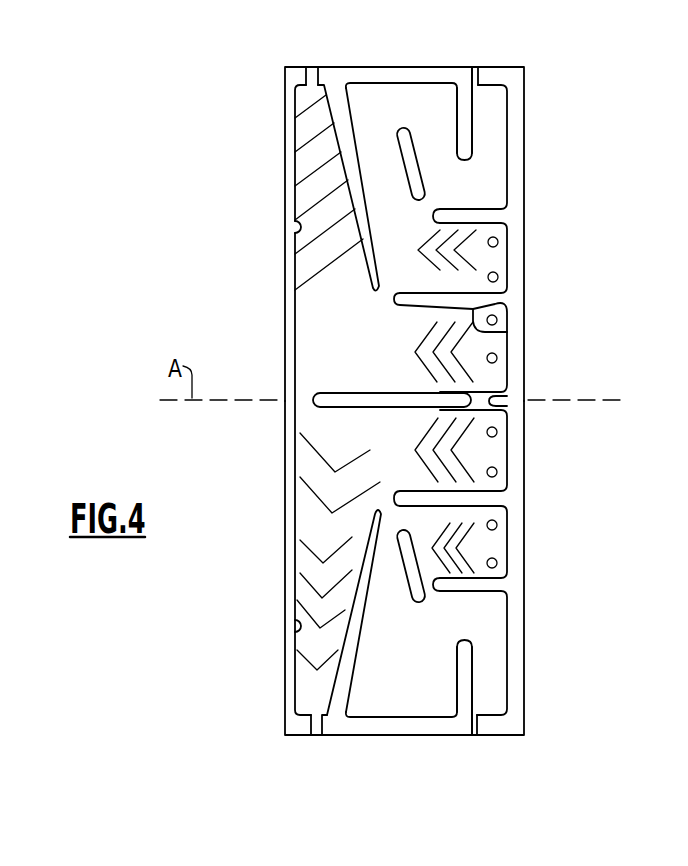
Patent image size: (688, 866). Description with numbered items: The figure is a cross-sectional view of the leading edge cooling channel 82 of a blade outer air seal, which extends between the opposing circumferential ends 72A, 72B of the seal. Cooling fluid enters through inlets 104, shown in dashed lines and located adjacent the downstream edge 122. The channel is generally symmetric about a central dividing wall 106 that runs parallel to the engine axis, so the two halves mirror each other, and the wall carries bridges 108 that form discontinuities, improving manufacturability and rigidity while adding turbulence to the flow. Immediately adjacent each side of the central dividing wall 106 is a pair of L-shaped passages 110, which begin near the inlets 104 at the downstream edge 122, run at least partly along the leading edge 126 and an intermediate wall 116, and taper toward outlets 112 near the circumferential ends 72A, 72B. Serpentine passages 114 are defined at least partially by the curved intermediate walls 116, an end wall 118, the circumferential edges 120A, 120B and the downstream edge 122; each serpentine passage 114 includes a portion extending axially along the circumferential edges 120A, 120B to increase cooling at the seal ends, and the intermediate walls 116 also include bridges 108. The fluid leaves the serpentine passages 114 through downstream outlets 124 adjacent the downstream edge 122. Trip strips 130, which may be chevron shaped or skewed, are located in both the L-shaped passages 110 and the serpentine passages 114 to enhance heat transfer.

The circumferential end 72A is at (458, 735).
The circumferential end 72B is at (390, 67).
The leading edge cooling channel 82 is at (305, 119).
The inlets 104 is at (497, 242).
The central dividing wall 106 is at (351, 400).
The bridges 108 is at (413, 212).
The L-shaped passages 110 is at (304, 282).
The outlets 112 is at (307, 67).
The serpentine passages 114 is at (428, 92).
The intermediate walls 116 is at (350, 178).
The end wall 118 is at (467, 118).
The circumferential edge 120A is at (412, 717).
The circumferential edge 120B is at (366, 83).
The downstream edge 122 is at (507, 148).
The downstream outlets 124 is at (474, 67).
The leading edge 126 is at (294, 226).
The trip strips 130 is at (432, 243).